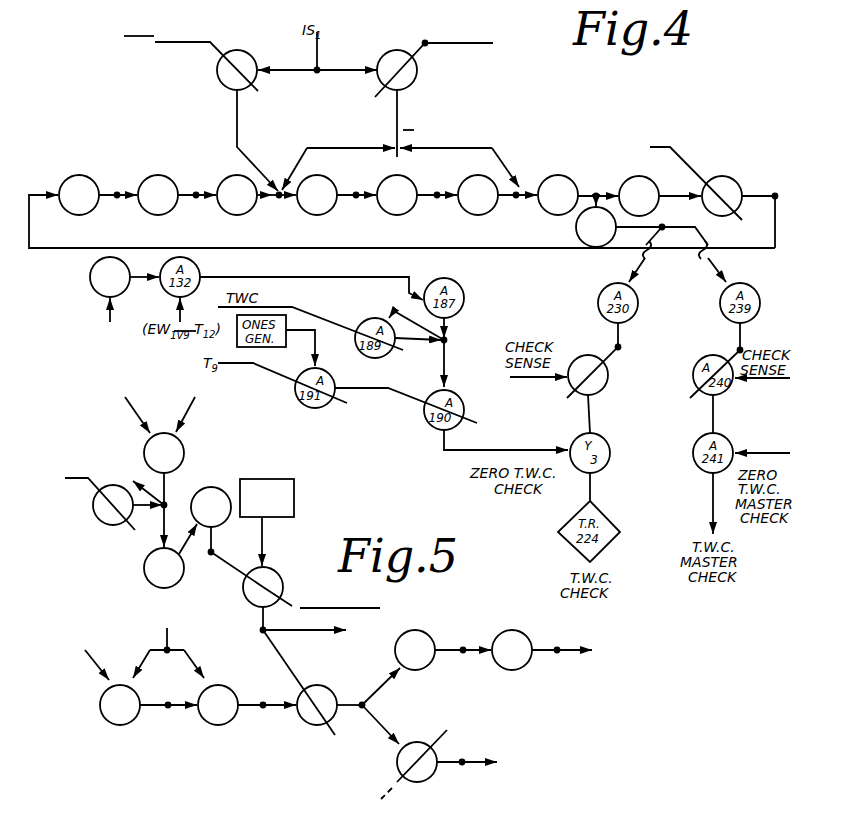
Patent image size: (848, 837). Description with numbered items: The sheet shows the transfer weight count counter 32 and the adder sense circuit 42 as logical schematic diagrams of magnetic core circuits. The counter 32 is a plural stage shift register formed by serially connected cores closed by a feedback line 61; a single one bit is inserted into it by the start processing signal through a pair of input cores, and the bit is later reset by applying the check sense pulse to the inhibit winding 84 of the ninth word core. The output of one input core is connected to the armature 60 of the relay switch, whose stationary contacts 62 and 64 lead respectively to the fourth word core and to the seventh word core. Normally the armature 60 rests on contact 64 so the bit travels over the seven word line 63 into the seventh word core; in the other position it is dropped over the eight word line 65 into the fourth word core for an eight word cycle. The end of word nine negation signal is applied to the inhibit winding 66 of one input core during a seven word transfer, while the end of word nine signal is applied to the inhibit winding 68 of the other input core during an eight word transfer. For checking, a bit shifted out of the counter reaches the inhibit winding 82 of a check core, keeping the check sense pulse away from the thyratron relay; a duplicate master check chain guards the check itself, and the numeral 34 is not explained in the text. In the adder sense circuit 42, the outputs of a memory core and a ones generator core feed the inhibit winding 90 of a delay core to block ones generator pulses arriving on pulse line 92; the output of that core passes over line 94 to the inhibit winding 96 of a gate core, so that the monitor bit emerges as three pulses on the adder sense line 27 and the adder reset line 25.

In FIG. 4, the word ring counter 34 is at (200, 133).
In FIG. 4, the feedback line 61 is at (392, 248).
In FIG. 4, the inhibit winding of core A238 66 is at (258, 66).
In FIG. 4, the inhibit winding of core A237 68 is at (403, 51).
In FIG. 4, the armature of relay switch S 60 is at (400, 103).
In FIG. 4, the stationary contact 62 is at (378, 146).
In FIG. 4, the stationary contact 64 is at (404, 152).
In FIG. 4, the 8 word line 65 is at (396, 155).
In FIG. 4, the 7 word line 63 is at (496, 156).
In FIG. 4, the inhibit winding of core W9 84 is at (718, 185).
In FIG. 4, the transfer weight count counter 32 is at (86, 297).
In FIG. 4, the inhibit winding of core A231 82 is at (591, 362).
In FIG. 5, the adder sense circuit 42 is at (380, 598).
In FIG. 5, the pulse line 92 is at (266, 538).
In FIG. 5, the inhibit winding of core D121 90 is at (285, 586).
In FIG. 5, the line 94 is at (303, 634).
In FIG. 5, the inhibit winding of core A243 96 is at (322, 689).
In FIG. 5, the adder sense line 27 is at (571, 648).
In FIG. 5, the adder reset line 25 is at (472, 761).